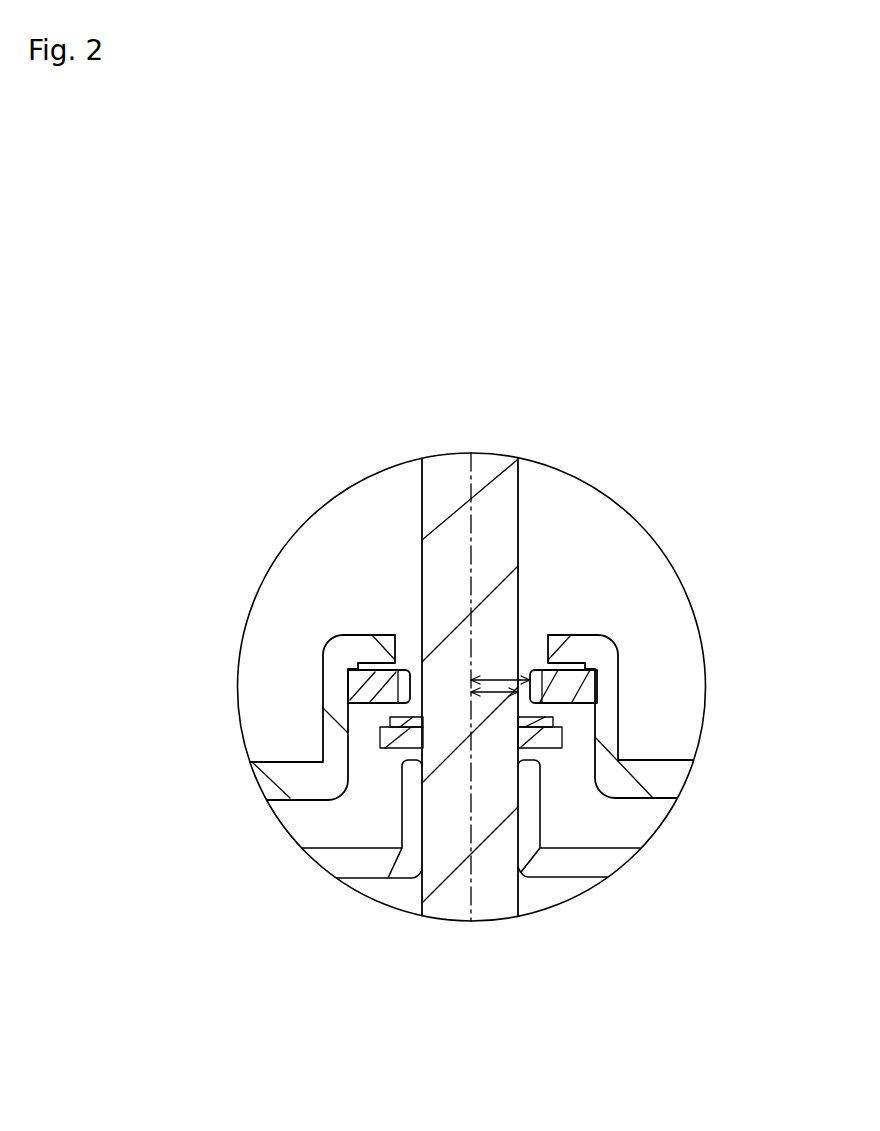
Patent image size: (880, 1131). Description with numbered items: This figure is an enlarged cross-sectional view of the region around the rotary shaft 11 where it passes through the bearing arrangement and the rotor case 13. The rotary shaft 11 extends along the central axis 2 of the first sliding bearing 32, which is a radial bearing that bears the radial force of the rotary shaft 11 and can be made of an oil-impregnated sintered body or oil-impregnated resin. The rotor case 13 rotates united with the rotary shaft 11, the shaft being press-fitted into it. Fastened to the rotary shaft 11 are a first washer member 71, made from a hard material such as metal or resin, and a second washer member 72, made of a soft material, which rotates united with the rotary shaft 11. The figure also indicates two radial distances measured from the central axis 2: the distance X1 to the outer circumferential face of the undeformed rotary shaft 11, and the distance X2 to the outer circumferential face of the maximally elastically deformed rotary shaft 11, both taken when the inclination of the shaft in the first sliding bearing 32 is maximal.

The rotary shaft 11 is at (442, 475).
The central axis 2 is at (470, 563).
The rotor case 13 is at (295, 772).
The first sliding bearing 32 is at (578, 688).
The second washer member 72 is at (557, 722).
The first washer member 71 is at (565, 741).
The distance X1 is at (506, 680).
The distance X2 is at (492, 693).